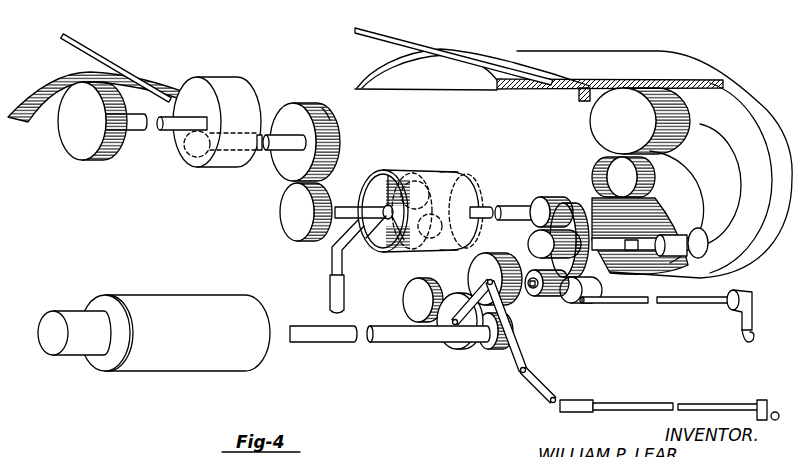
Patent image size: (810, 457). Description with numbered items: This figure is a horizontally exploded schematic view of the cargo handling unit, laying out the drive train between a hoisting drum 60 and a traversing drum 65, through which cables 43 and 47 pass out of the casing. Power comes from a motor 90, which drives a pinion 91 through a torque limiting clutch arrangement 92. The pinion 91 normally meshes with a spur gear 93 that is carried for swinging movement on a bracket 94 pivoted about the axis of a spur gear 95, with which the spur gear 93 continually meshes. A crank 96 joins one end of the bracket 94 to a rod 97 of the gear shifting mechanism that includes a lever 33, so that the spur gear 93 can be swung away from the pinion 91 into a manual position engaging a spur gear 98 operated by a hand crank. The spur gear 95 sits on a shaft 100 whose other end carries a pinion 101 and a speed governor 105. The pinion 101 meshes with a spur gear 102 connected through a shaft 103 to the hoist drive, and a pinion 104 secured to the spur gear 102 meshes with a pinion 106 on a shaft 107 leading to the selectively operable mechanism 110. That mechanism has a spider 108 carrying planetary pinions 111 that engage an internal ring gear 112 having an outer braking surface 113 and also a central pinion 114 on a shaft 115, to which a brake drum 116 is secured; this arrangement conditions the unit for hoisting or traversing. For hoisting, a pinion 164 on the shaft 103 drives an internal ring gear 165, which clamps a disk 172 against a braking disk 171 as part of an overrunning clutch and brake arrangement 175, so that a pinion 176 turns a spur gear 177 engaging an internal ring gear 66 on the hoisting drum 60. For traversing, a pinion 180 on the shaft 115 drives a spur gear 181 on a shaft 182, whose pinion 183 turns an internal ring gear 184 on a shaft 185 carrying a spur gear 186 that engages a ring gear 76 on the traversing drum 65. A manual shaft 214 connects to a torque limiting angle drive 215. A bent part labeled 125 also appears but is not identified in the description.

The lever 33 is at (762, 400).
The cable 43 is at (436, 37).
The cable 47 is at (115, 41).
The hoisting drum 60 is at (611, 50).
The traversing drum 65 is at (161, 47).
The internal ring gear 66 is at (578, 96).
The ring gear 76 is at (48, 88).
The motor 90 is at (138, 297).
The pinion 91 is at (485, 350).
The torque limiting clutch arrangement 92 is at (268, 306).
The spur gear 93 is at (448, 351).
The bracket 94 is at (537, 357).
The spur gear 95 is at (484, 260).
The crank 96 is at (557, 396).
The rod 97 is at (650, 402).
The spur gear 98 is at (404, 302).
The shaft 100 is at (524, 269).
The pinion 101 is at (535, 299).
The spur gear 102 is at (572, 205).
The shaft 103 is at (600, 252).
The pinion 104 is at (527, 238).
The speed governor 105 is at (578, 302).
The pinion 106 is at (546, 199).
The shaft 107 is at (526, 207).
The spider 108 is at (456, 175).
The selectively operable mechanism 110 is at (440, 157).
The planetary pinions 111 is at (366, 252).
The internal ring gear 112 is at (408, 178).
The outer braking surface 113 is at (496, 190).
The central pinion 114 is at (488, 180).
The shaft 115 is at (342, 206).
The brake drum 116 is at (383, 172).
The control arm 125 is at (330, 259).
The pinion 164 is at (712, 245).
The internal ring gear 165 is at (742, 90).
The braking disk 171 is at (735, 190).
The disk 172 is at (738, 160).
The overrunning clutch and brake arrangement 175 is at (720, 145).
The pinion 176 is at (660, 196).
The spur gear 177 is at (590, 130).
The pinion 180 is at (278, 212).
The spur gear 181 is at (338, 118).
The shaft 182 is at (283, 117).
The pinion 183 is at (198, 157).
The internal ring gear 184 is at (238, 82).
The shaft 185 is at (163, 131).
The spur gear 186 is at (104, 164).
The shaft 214 is at (698, 304).
The torque limiting angle drive 215 is at (754, 300).